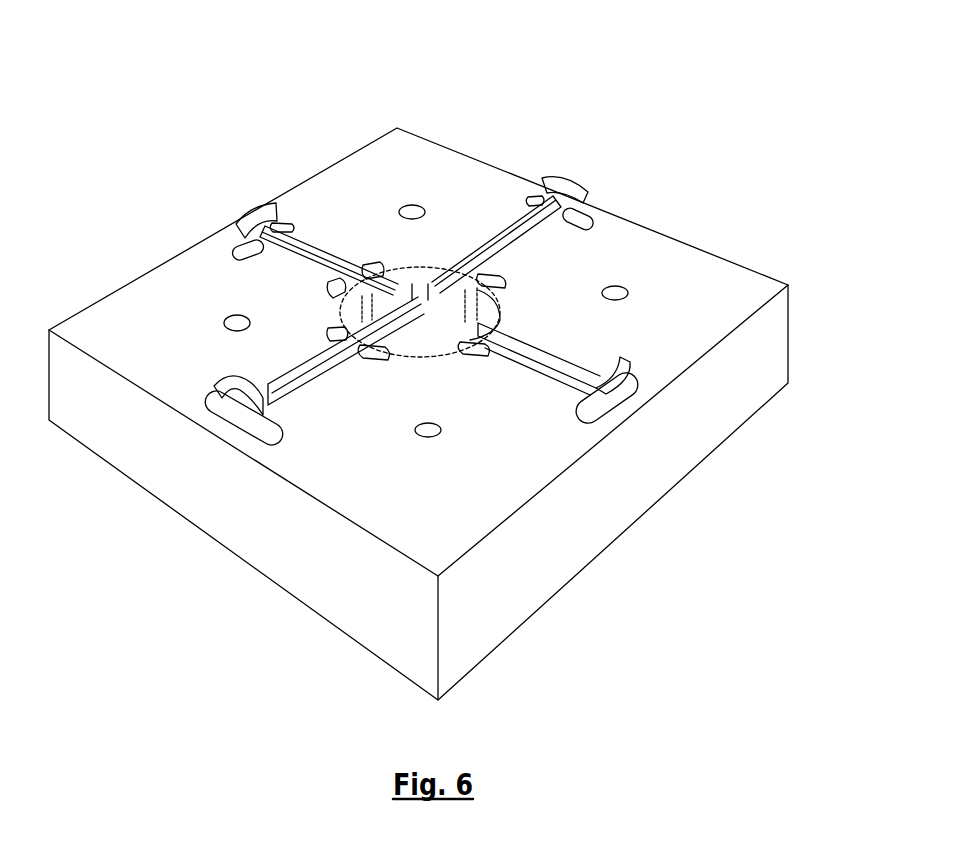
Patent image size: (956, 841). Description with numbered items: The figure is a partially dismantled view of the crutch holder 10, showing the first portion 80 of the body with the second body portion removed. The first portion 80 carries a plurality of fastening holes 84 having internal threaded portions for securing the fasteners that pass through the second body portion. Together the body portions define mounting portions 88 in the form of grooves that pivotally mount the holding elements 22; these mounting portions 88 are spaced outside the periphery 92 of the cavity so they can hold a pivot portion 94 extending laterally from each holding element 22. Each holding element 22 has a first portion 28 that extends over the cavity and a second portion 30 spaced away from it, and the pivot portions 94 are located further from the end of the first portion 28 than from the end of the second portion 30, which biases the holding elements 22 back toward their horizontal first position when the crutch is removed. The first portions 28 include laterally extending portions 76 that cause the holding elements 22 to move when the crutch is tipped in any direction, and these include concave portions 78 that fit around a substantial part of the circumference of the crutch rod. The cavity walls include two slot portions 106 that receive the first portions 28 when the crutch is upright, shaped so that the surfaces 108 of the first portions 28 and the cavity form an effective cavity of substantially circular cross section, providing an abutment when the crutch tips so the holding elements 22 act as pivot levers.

The crutch holder 10 is at (558, 73).
The holding elements 22 is at (300, 255).
The first portion 28 is at (340, 304).
The second portion 30 is at (435, 281).
The laterally extending portions 76 is at (270, 205).
The concave portions 78 is at (246, 215).
The first portion 80 is at (425, 152).
The fastening holes 84 is at (237, 314).
The mounting portions 88 is at (332, 334).
The periphery 92 is at (412, 278).
The pivot portions 94 is at (368, 262).
The slot portions 106 is at (497, 304).
The surfaces 108 is at (446, 272).